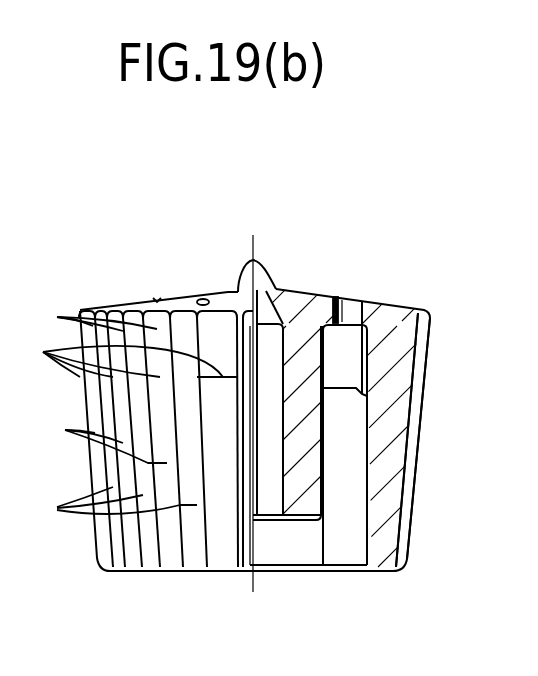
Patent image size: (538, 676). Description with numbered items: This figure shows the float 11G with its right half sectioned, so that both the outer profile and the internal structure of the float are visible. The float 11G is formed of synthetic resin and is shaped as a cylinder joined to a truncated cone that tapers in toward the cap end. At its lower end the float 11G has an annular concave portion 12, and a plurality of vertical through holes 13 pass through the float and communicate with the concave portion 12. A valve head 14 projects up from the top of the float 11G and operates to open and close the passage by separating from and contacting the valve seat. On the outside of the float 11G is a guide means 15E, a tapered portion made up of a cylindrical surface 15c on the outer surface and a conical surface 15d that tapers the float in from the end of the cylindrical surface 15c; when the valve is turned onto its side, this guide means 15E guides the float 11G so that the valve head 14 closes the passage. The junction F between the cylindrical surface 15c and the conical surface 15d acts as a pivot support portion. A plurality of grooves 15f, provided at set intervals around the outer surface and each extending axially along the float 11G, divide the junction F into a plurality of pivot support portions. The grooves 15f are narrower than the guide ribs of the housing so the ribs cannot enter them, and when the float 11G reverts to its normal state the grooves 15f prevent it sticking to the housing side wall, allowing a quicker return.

The float 11G is at (403, 328).
The concave portion 12 is at (345, 507).
The holes 13 is at (200, 300).
The valve head 14 is at (242, 282).
The cylindrical surface 15c is at (447, 313).
The conical surface 15d is at (438, 532).
The guide means 15E is at (423, 423).
The grooves 15f is at (437, 478).
The junction F is at (452, 360).